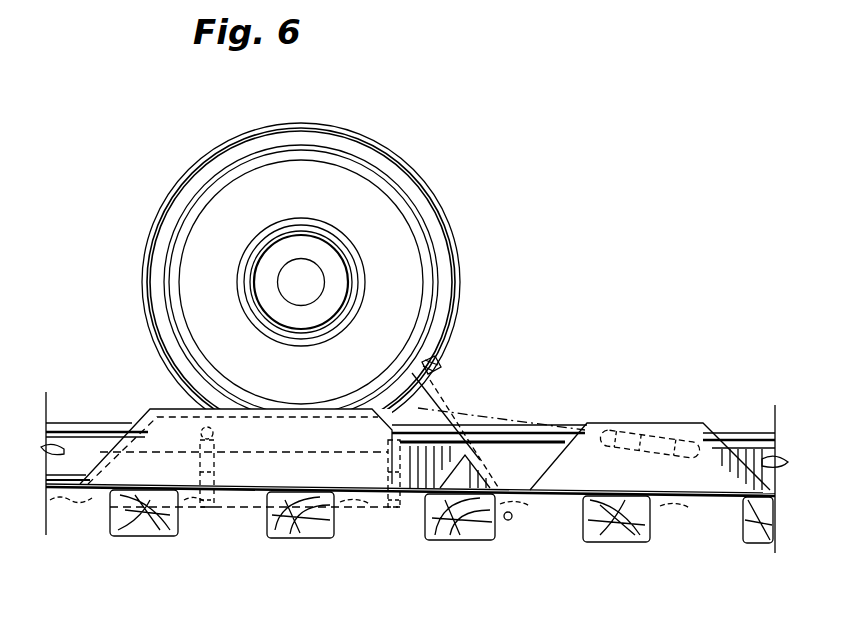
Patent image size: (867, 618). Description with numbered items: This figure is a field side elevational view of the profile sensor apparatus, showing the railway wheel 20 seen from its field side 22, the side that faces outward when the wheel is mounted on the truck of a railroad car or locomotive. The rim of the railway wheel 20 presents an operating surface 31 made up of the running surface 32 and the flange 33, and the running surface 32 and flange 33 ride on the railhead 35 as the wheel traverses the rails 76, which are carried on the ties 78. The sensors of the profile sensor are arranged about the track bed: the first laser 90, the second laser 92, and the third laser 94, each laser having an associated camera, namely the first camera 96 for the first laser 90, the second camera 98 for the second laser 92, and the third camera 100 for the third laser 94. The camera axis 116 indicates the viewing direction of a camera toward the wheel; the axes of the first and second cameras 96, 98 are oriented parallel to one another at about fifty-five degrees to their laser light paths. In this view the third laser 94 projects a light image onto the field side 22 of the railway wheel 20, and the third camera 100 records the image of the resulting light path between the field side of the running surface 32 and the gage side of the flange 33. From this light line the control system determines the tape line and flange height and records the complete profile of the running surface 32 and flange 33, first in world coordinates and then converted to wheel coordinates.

The railway wheel 20 is at (319, 282).
The field side 22 is at (293, 386).
The operating surface 31 is at (443, 328).
The running surface 32 is at (450, 300).
The flange 33 is at (455, 277).
The railhead 35 is at (118, 422).
The rails 76 is at (63, 467).
The ties 78 is at (282, 532).
The laser 1 90 is at (390, 478).
The laser 2 92 is at (214, 478).
The laser 3 94 is at (507, 527).
The camera 1 96 is at (380, 446).
The camera 2 98 is at (218, 434).
The camera 3 100 is at (662, 470).
The camera axis 116 is at (436, 366).